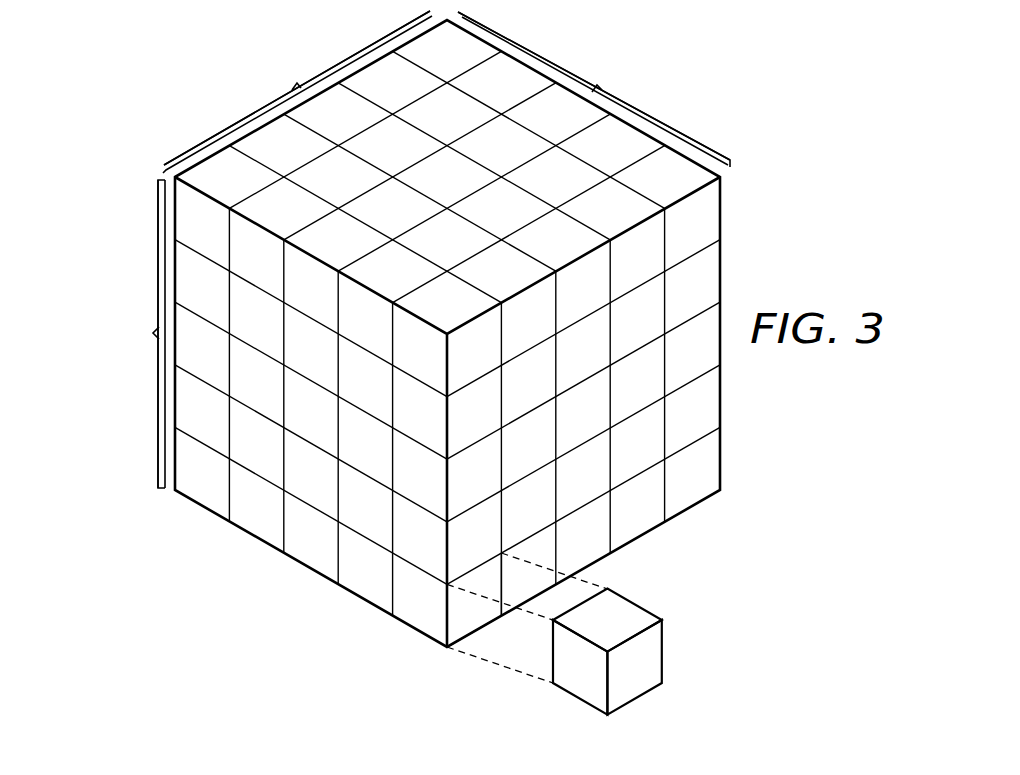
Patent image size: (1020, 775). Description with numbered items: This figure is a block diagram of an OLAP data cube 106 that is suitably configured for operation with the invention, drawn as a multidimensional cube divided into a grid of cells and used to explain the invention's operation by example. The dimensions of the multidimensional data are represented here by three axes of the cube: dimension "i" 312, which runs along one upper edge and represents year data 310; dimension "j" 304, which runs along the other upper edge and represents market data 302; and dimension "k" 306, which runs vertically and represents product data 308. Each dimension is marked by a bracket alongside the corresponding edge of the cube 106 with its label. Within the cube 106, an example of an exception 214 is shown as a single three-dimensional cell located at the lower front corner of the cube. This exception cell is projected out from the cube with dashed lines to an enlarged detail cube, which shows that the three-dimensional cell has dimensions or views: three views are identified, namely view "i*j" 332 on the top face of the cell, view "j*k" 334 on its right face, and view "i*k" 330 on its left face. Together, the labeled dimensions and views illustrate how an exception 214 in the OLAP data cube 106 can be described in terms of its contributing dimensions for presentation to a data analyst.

The OLAP data cube 106 is at (226, 574).
The exception 214 is at (418, 618).
The market data 302 is at (297, 92).
The dimension "j" 304 is at (197, 133).
The dimension "k" 306 is at (148, 398).
The product data 308 is at (115, 334).
The year data 310 is at (594, 89).
The dimension "i" 312 is at (688, 127).
The view "i*k" 330 is at (575, 682).
The view "i*j" 332 is at (678, 600).
The view "j*k" 334 is at (657, 668).